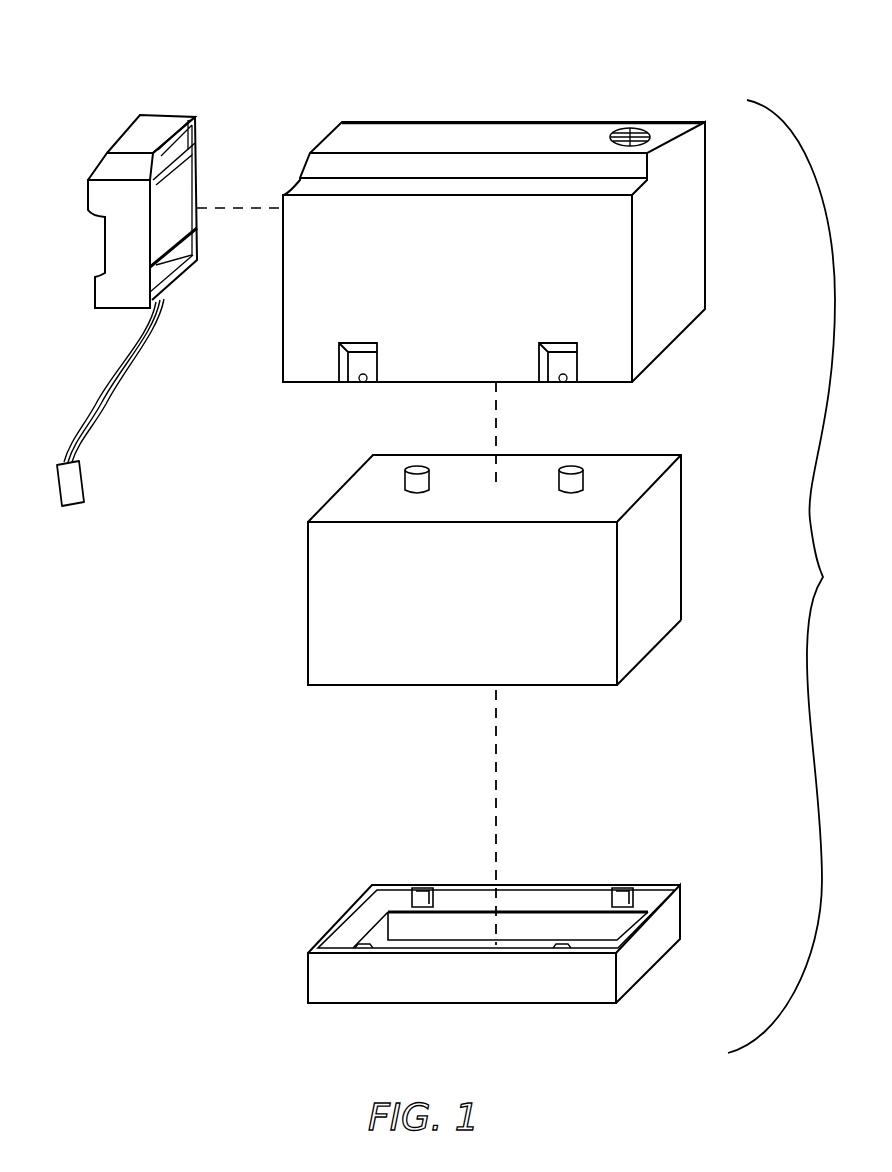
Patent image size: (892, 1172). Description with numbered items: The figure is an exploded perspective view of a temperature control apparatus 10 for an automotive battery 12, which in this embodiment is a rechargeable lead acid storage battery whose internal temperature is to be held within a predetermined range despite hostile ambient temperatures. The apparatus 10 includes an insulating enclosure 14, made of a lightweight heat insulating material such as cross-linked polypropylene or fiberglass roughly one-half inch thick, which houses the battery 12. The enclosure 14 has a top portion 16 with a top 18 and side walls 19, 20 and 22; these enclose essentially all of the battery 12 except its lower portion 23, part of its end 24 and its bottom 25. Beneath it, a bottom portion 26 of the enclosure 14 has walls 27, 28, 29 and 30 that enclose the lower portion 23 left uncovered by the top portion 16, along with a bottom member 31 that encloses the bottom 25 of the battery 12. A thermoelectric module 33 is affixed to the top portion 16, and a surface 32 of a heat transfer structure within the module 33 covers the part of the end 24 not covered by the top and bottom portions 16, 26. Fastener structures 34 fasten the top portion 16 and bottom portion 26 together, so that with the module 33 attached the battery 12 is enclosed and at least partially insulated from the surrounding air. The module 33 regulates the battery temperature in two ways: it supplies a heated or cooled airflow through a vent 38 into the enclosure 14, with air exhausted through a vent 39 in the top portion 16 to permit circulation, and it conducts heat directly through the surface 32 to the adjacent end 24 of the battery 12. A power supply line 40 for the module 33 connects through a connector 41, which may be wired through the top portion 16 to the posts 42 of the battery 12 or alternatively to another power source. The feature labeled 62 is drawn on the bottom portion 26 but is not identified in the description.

The temperature control apparatus 10 is at (95, 24).
The automotive battery 12 is at (690, 578).
The insulating enclosure 14 is at (533, 575).
The top portion 16 is at (722, 263).
The top 18 is at (492, 138).
The side wall 19 is at (688, 262).
The side wall 20 is at (368, 251).
The side wall 22 is at (285, 345).
The lower portion 23 is at (371, 682).
The end 24 is at (298, 612).
The bottom 25 is at (588, 687).
The bottom portion 26 is at (690, 914).
The wall 27 is at (655, 940).
The wall 28 is at (322, 985).
The wall 29 is at (345, 914).
The wall 30 is at (505, 892).
The bottom member 31 is at (558, 1005).
The surface of heat transfer structure 32 is at (188, 182).
The thermoelectric module 33 is at (95, 246).
The fastener structures 34 is at (360, 375).
The vent 38 is at (186, 135).
The vent 39 is at (642, 125).
The power supply line 40 is at (108, 385).
The connector 41 is at (74, 487).
The posts 42 is at (424, 468).
The ledge in tray 62 is at (547, 912).